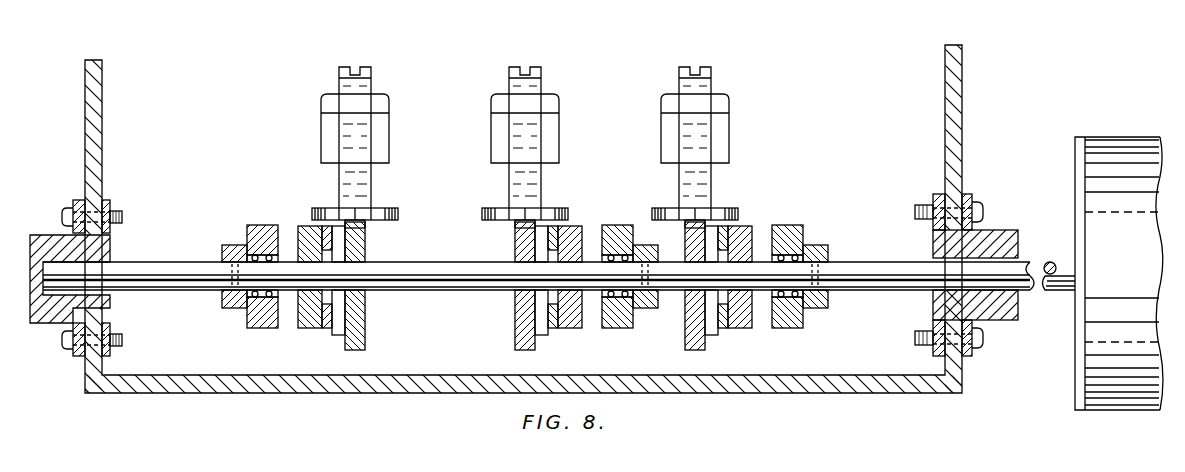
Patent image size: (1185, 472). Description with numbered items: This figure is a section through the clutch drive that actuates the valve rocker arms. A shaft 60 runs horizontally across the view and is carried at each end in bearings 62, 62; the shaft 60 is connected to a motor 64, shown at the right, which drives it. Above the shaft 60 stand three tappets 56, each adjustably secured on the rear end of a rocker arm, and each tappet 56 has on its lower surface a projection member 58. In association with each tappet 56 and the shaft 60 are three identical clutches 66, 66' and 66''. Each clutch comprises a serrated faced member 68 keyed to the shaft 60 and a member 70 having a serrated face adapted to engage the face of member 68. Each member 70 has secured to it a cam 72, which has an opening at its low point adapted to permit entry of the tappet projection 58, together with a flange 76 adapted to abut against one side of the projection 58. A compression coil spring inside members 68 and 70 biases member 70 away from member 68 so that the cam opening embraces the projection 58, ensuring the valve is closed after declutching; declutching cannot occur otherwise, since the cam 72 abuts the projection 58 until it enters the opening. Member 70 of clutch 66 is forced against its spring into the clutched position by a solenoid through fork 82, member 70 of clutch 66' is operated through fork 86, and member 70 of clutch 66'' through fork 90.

The tappet 56 is at (398, 213).
The projection member 58 is at (370, 232).
The shaft 60 is at (170, 266).
The bearing 62 is at (110, 304).
The motor 64 is at (1097, 372).
The clutch 66 is at (274, 291).
The clutch 66' is at (557, 290).
The clutch 66'' is at (777, 291).
The serrated faced member 68 is at (258, 227).
The member having a serrated face 70 is at (306, 227).
The cam 72 is at (367, 318).
The flange 76 is at (338, 327).
The fork 82 is at (325, 330).
The fork 86 is at (555, 330).
The fork 90 is at (725, 330).